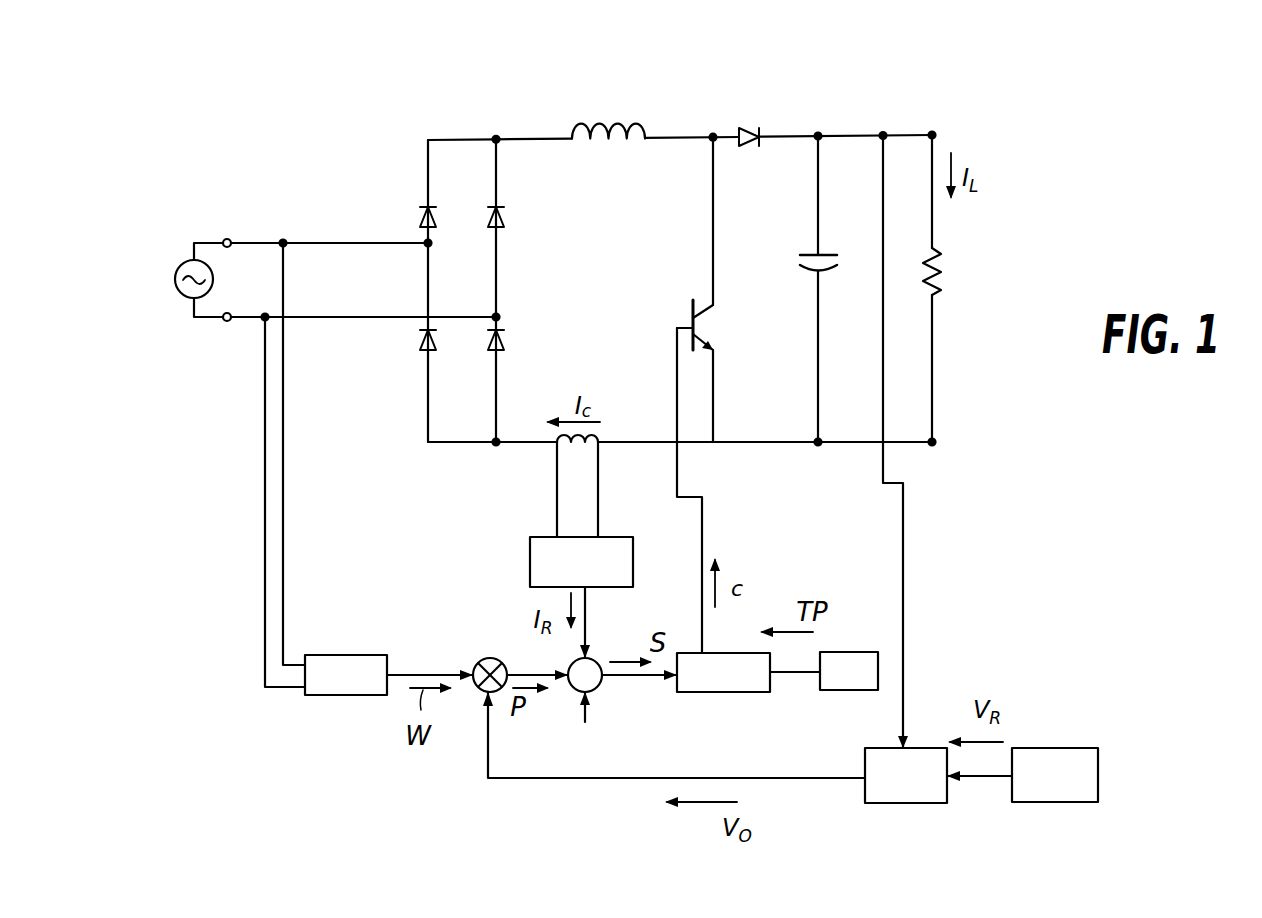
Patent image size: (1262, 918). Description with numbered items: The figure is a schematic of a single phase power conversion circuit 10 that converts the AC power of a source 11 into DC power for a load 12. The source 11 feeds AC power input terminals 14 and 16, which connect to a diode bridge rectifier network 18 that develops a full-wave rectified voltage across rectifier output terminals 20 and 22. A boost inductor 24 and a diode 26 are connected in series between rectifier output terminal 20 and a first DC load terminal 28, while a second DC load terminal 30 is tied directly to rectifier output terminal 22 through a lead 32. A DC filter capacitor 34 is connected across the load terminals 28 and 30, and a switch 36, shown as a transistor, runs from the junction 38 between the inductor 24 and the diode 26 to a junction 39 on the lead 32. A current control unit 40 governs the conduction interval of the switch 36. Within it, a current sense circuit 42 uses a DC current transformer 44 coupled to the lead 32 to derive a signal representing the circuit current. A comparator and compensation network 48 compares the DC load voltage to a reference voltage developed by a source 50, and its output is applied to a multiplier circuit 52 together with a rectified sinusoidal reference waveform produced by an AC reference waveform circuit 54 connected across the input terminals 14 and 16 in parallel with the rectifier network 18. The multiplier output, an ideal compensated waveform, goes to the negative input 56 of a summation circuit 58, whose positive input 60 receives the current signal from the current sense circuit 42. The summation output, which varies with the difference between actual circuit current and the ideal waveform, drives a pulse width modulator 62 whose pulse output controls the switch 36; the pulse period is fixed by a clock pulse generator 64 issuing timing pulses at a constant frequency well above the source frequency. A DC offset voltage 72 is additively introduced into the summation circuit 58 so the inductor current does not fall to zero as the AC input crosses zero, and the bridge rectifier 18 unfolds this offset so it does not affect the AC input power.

The single phase power conversion circuit 10 is at (792, 60).
The source 11 is at (175, 279).
The load 12 is at (941, 270).
The AC power input terminal 14 is at (227, 239).
The AC power input terminal 16 is at (227, 321).
The diode bridge rectifier network 18 is at (440, 292).
The rectifier output terminal 20 is at (498, 137).
The rectifier output terminal 22 is at (496, 446).
The boost inductor 24 is at (620, 125).
The diode 26 is at (762, 133).
The first DC load terminal 28 is at (934, 133).
The second DC load terminal 30 is at (935, 444).
The lead 32 is at (767, 445).
The DC filter capacitor 34 is at (835, 255).
The switch 36 is at (690, 302).
The junction 38 is at (713, 134).
The junction 39 is at (717, 441).
The current control unit 40 is at (613, 801).
The current sense circuit 42 is at (581, 562).
The DC current transformer 44 is at (602, 436).
The comparator and compensation network 48 is at (906, 775).
The source 50 is at (1022, 775).
The multiplier circuit 52 is at (483, 657).
The AC reference waveform circuit 54 is at (346, 675).
The negative input 56 is at (571, 687).
The summation circuit 58 is at (600, 688).
The positive input 60 is at (597, 656).
The pulse width modulator 62 is at (723, 672).
The clock pulse generator 64 is at (824, 671).
The DC offset voltage 72 is at (588, 718).